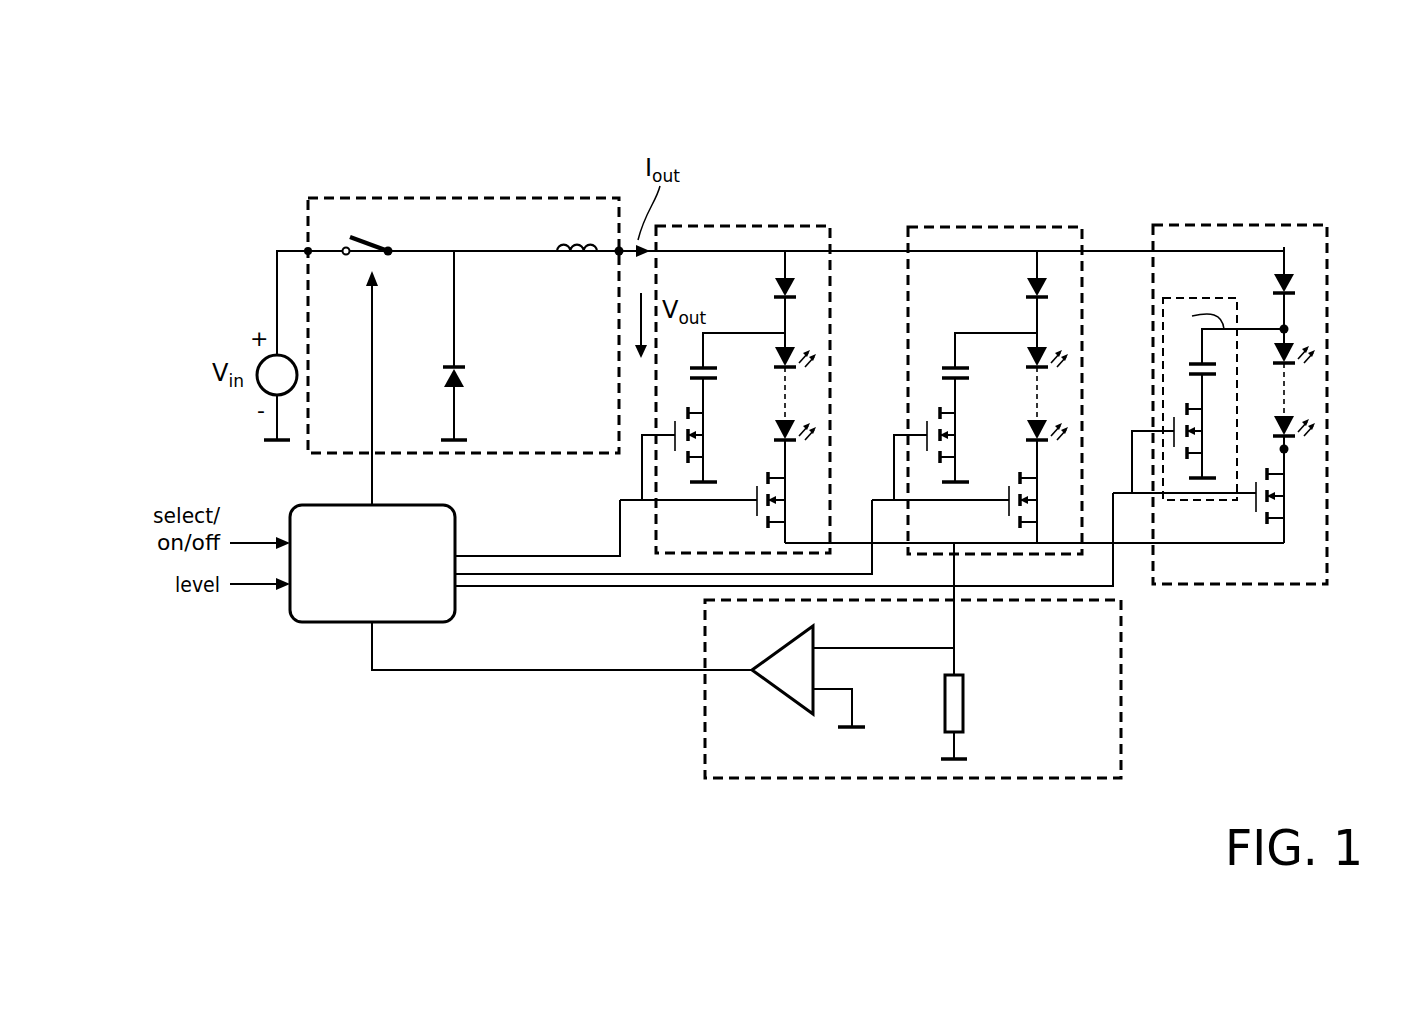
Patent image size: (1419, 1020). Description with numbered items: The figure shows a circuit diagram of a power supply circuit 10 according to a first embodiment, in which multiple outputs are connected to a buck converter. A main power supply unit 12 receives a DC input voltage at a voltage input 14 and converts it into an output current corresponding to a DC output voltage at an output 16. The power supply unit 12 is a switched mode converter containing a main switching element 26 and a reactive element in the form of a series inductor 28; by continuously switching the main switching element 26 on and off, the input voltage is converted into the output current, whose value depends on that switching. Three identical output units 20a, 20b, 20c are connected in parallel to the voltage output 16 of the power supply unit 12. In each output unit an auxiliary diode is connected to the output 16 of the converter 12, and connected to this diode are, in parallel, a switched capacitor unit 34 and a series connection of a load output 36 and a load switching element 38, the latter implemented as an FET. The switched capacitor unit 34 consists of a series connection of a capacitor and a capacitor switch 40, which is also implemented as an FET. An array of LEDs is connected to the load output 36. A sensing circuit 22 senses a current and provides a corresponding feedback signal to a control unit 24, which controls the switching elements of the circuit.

The power supply circuit 10 is at (1268, 116).
The main power supply unit 12 is at (434, 319).
The voltage input 14 is at (308, 218).
The output 16 is at (616, 258).
The output unit 20a is at (752, 226).
The output unit 20b is at (1005, 227).
The output unit 20c is at (1250, 377).
The sensing circuit 22 is at (1121, 700).
The control unit 24 is at (322, 622).
The main switching element 26 is at (391, 278).
The series inductor 28 is at (580, 244).
The switched capacitor unit 34 is at (1197, 335).
The load output 36 is at (1288, 330).
The load switching element 38 is at (1287, 511).
The capacitor switch 40 is at (1189, 405).